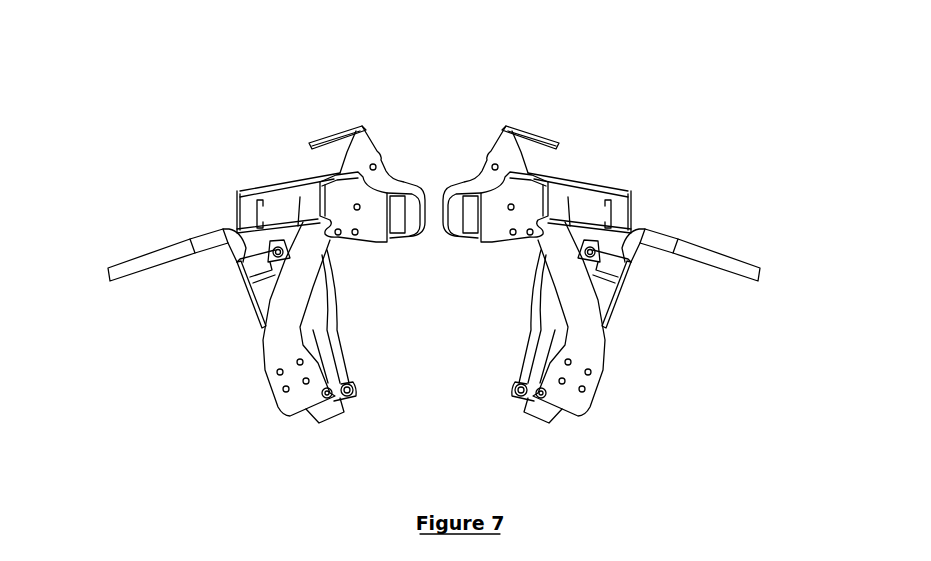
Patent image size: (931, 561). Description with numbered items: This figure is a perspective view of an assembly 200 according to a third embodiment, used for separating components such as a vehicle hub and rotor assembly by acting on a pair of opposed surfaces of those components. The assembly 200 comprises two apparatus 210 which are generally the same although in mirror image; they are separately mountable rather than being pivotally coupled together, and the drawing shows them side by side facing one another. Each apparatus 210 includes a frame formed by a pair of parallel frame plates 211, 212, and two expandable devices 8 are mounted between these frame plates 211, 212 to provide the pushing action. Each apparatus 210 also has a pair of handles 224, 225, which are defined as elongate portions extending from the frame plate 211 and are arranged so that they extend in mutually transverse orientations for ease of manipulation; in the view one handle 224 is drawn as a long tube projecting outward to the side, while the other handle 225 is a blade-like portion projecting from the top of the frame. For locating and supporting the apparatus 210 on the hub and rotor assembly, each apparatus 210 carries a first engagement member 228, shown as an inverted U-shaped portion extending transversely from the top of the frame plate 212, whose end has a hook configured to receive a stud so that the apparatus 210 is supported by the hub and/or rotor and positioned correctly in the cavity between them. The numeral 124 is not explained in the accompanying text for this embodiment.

The assembly 200 is at (250, 465).
The apparatus 210 is at (200, 375).
The expandable device 8 is at (233, 190).
The support tube 124 is at (182, 250).
The handle 224 is at (703, 250).
The handle 225 is at (340, 133).
The first engagement member 228 is at (338, 236).
The frame plate 211 is at (336, 313).
The frame plate 212 is at (272, 357).